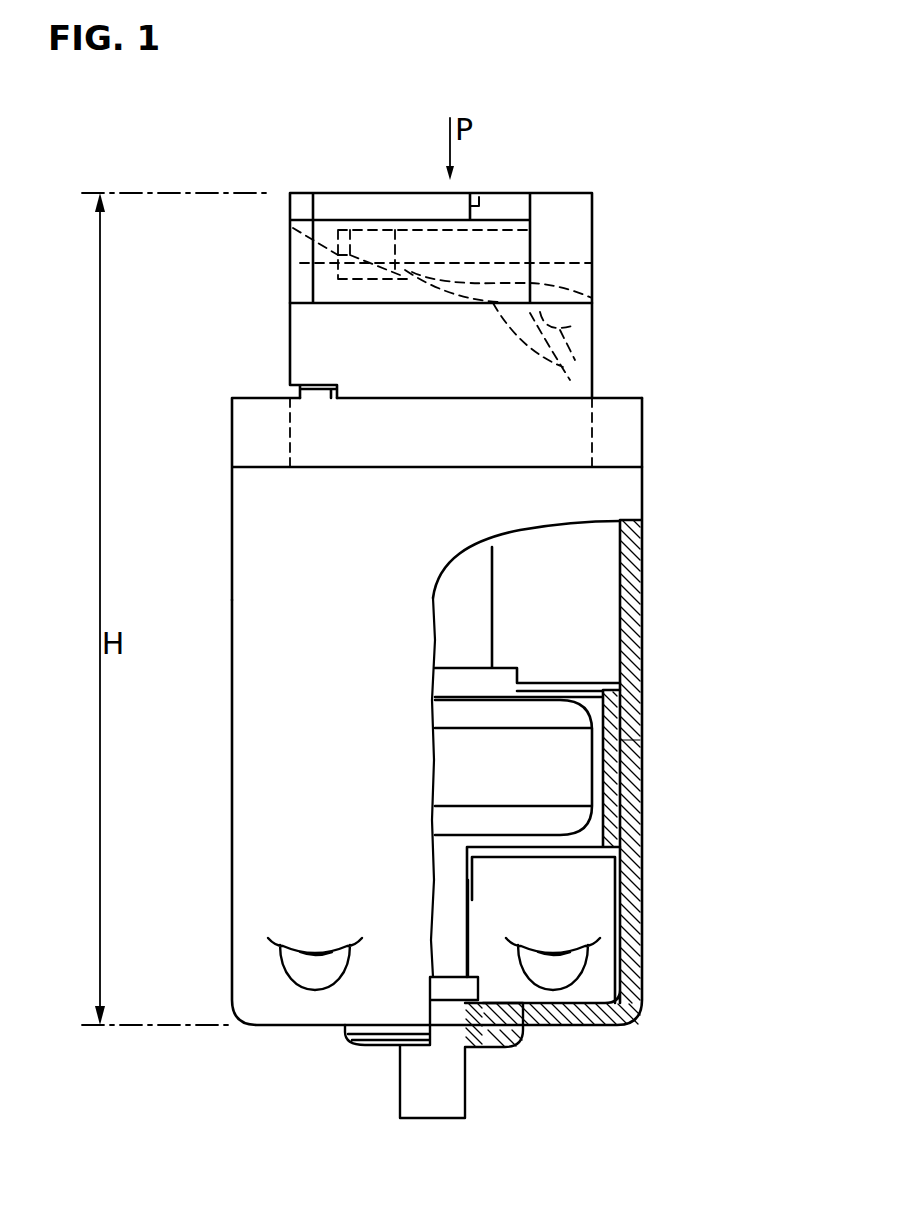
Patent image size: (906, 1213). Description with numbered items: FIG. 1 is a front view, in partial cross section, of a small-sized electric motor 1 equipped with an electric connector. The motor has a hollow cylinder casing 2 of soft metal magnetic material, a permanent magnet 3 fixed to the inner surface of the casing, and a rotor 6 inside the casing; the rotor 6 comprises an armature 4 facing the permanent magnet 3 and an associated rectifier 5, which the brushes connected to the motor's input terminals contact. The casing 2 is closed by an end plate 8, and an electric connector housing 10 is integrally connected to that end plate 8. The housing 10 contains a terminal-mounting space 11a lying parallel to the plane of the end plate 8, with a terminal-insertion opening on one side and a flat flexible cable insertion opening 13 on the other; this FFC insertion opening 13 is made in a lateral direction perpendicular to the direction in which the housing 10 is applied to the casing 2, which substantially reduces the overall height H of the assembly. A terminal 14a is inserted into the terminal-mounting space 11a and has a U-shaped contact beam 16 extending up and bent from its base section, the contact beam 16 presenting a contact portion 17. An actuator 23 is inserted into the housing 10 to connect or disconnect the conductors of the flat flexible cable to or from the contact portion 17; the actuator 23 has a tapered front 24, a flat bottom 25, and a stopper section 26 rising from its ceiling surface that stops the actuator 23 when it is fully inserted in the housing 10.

The small-sized electric motor 1 is at (652, 742).
The hollow cylinder casing 2 is at (632, 803).
The permanent magnet 3 is at (608, 708).
The armature 4 is at (582, 773).
The rectifier 5 is at (480, 640).
The rotor 6 is at (590, 670).
The end plate 8 is at (620, 452).
The electric connector housing 10 is at (415, 363).
The terminal-mounting space 11a is at (338, 278).
The flat flexible cable insertion opening 13 is at (592, 268).
The terminal 14a is at (592, 320).
The contact beam 16 is at (592, 367).
The contact portion 17 is at (415, 267).
The actuator 23 is at (603, 213).
The tapered front 24 is at (290, 227).
The flat bottom 25 is at (395, 230).
The stopper section 26 is at (478, 197).